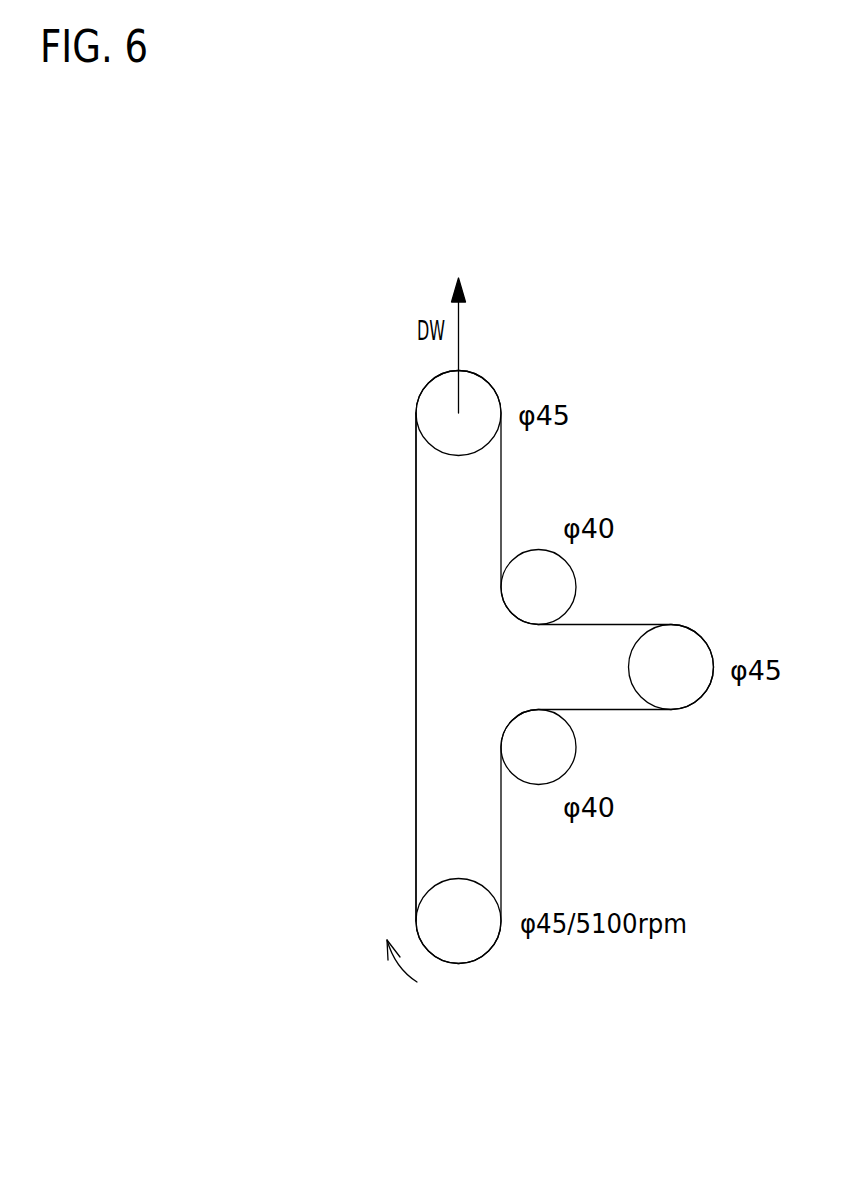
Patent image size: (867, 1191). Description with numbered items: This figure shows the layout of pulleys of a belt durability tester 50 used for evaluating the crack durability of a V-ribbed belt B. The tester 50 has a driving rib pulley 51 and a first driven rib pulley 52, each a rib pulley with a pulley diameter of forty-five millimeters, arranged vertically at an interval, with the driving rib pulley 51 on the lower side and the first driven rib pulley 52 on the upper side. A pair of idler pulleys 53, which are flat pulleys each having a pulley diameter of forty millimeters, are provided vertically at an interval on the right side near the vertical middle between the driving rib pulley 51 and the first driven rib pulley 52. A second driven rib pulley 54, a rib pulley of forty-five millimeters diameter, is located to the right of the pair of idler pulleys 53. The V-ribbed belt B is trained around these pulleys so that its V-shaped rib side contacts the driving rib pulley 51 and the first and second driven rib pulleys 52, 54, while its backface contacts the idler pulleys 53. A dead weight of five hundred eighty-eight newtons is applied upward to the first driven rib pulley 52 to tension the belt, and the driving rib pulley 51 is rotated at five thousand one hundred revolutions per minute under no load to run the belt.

The belt durability tester 50 is at (332, 325).
The driving rib pulley 51 is at (457, 945).
The first driven rib pulley 52 is at (431, 411).
The idler pulleys 53 is at (555, 587).
The second driven rib pulley 54 is at (687, 643).
The V-ribbed belt B is at (416, 666).